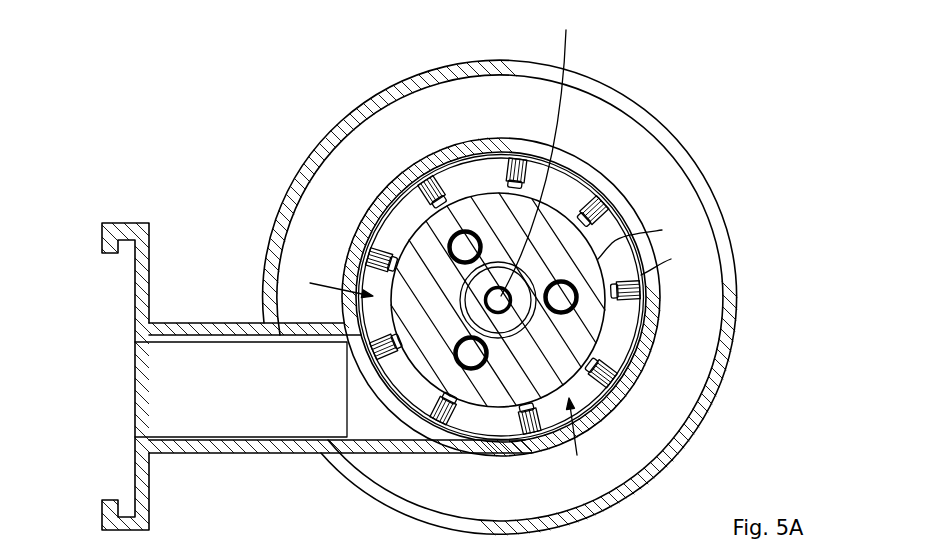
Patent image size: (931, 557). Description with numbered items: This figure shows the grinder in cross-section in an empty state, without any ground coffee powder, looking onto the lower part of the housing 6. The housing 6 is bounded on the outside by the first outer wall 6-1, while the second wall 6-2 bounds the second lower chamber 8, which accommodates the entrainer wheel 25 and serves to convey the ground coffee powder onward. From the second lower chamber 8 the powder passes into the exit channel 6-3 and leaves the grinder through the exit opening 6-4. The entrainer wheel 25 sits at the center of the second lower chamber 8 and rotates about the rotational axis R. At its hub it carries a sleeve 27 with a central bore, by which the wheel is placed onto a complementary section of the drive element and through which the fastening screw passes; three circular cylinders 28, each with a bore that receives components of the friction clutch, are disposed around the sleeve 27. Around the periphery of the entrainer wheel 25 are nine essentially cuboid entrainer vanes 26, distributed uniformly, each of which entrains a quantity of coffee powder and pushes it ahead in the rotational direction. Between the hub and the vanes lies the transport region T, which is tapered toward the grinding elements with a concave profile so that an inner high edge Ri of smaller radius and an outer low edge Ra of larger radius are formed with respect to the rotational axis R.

The housing 6 is at (483, 50).
The first outer wall 6-1 is at (381, 99).
The second wall 6-2 is at (398, 178).
The exit channel 6-3 is at (317, 430).
The exit opening 6-4 is at (133, 405).
The second lower chamber 8 is at (586, 169).
The entrainer vanes 26 is at (613, 207).
The sleeve 27 is at (499, 292).
The circular cylinders 28 is at (466, 233).
The entrainer wheel 25 is at (522, 368).
The rotational axis R is at (537, 150).
The inner high edge Ri is at (642, 237).
The outer low edge Ra is at (670, 260).
The transport region T is at (437, 375).